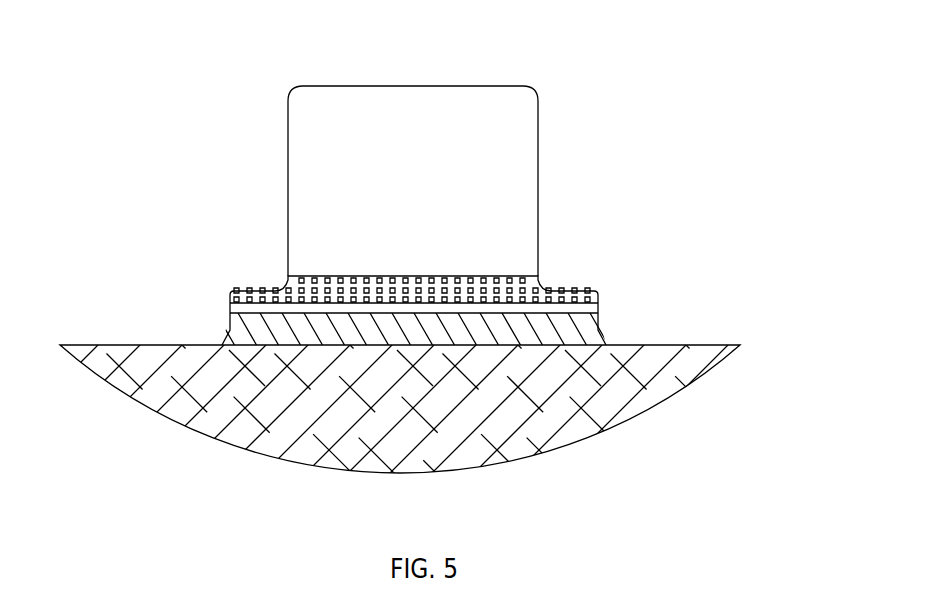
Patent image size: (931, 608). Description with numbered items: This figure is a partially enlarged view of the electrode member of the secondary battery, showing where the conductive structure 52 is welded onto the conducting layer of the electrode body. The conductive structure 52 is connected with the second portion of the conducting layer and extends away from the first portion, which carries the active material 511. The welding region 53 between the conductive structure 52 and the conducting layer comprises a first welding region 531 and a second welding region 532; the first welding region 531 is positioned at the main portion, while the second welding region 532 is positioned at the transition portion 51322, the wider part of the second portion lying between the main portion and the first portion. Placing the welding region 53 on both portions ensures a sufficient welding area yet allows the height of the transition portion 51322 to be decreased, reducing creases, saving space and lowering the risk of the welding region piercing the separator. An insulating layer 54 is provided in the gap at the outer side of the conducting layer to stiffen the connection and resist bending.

The conductive structure 52 is at (372, 112).
The welding region 53 is at (708, 212).
The first welding region 531 is at (543, 277).
The second welding region 532 is at (555, 289).
The transition portion 51322 is at (246, 308).
The insulating layer 54 is at (237, 332).
The active material 511 is at (570, 430).